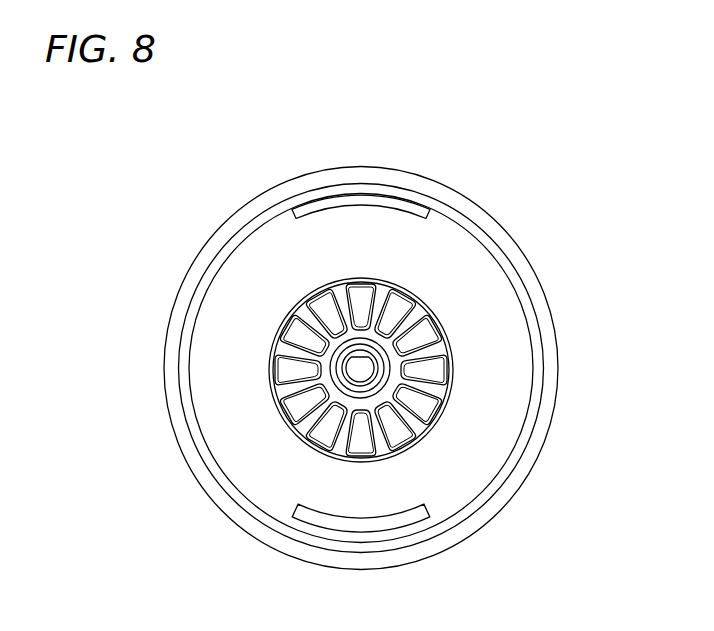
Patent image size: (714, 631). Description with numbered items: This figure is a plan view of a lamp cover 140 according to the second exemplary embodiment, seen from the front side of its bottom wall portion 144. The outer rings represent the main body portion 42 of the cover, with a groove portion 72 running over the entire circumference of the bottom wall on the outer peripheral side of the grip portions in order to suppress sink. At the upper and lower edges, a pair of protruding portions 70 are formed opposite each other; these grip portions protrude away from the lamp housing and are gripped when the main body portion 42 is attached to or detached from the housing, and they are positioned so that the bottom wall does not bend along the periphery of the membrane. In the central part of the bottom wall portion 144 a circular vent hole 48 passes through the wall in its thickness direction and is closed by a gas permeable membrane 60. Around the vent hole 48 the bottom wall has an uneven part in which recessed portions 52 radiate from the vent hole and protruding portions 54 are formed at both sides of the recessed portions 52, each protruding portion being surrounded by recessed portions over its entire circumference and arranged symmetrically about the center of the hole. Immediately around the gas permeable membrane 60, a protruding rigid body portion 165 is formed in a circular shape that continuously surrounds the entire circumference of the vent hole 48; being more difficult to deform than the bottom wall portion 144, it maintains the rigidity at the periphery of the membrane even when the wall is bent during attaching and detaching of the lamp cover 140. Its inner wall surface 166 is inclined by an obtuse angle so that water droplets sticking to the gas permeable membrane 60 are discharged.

The main body portion 42 is at (558, 426).
The vent hole 48 is at (362, 353).
The recessed portions 52 is at (437, 480).
The protruding portions 54 is at (418, 335).
The gas permeable membrane 60 is at (362, 376).
The protruding portions (grip portions) 70 is at (352, 206).
The groove portion 72 is at (228, 247).
The lamp cover 140 is at (580, 171).
The bottom wall portion 144 is at (215, 303).
The protruding rigid body portion 165 is at (385, 392).
The inner wall surface 166 is at (380, 366).